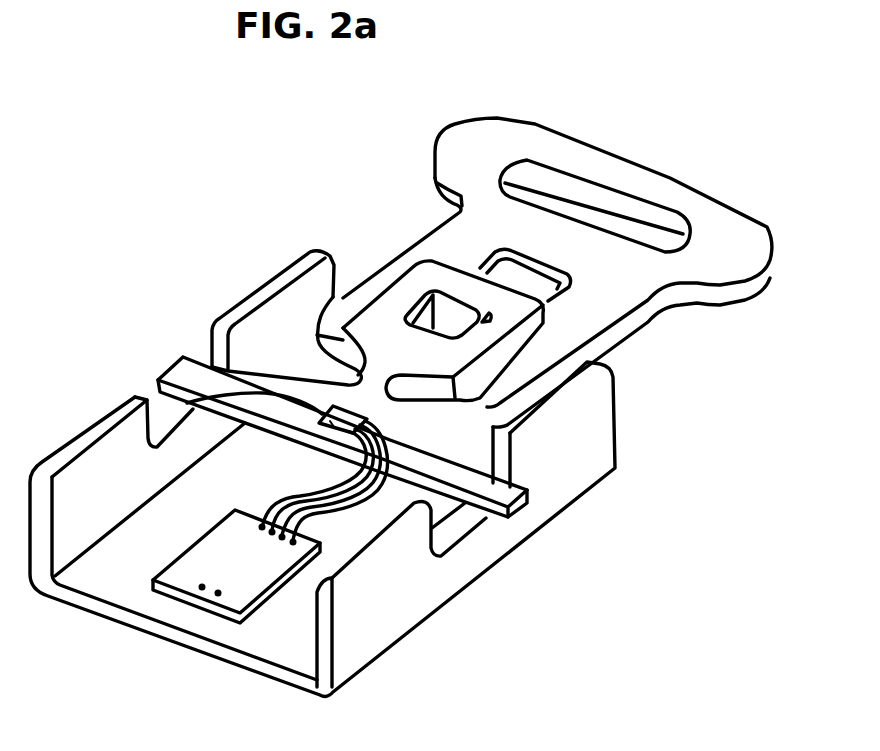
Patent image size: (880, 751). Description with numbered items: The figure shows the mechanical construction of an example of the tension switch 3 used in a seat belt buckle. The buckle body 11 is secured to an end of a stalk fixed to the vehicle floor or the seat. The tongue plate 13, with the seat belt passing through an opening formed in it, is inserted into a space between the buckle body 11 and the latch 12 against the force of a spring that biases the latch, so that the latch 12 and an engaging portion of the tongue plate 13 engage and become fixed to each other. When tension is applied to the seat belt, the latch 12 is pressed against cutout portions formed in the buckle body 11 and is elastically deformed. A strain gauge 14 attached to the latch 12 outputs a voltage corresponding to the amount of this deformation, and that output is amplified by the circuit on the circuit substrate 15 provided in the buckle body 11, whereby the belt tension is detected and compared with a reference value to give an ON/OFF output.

The tension switch 3 is at (393, 533).
The buckle body 11 is at (593, 412).
The latch 12 is at (440, 478).
The tongue plate 13 is at (718, 214).
The strain gauge 14 is at (190, 407).
The circuit substrate 15 is at (185, 582).